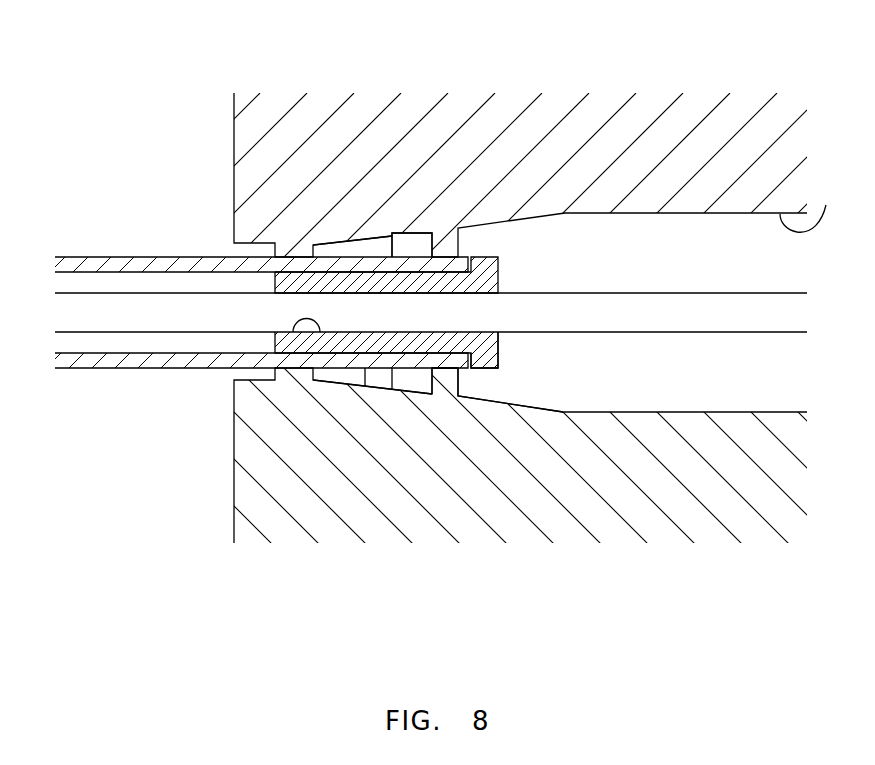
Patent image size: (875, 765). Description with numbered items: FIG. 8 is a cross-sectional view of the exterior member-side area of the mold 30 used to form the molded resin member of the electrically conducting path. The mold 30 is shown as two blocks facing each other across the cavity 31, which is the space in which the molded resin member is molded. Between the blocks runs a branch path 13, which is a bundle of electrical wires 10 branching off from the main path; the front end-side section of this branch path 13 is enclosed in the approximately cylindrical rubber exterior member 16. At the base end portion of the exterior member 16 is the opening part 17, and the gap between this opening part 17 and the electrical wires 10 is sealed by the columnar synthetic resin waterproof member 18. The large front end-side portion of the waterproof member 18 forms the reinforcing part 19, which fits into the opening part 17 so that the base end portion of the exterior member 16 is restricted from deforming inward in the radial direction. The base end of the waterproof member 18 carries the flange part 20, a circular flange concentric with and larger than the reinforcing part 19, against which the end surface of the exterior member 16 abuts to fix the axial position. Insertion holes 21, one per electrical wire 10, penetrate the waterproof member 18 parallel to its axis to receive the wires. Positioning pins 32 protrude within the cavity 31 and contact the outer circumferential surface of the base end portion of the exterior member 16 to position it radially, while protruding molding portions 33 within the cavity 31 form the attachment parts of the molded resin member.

The electrical wire 10 is at (160, 320).
The branch path 13 is at (149, 190).
The exterior member 16 is at (112, 265).
The opening part 17 is at (455, 271).
The waterproof member 18 is at (493, 338).
The reinforcing part 19 is at (413, 343).
The flange part 20 is at (496, 370).
The insertion hole 21 is at (293, 332).
The mold 30 is at (253, 130).
The cavity 31 is at (826, 205).
The positioning pin 32 is at (367, 250).
The protruding molding portion 33 is at (438, 257).